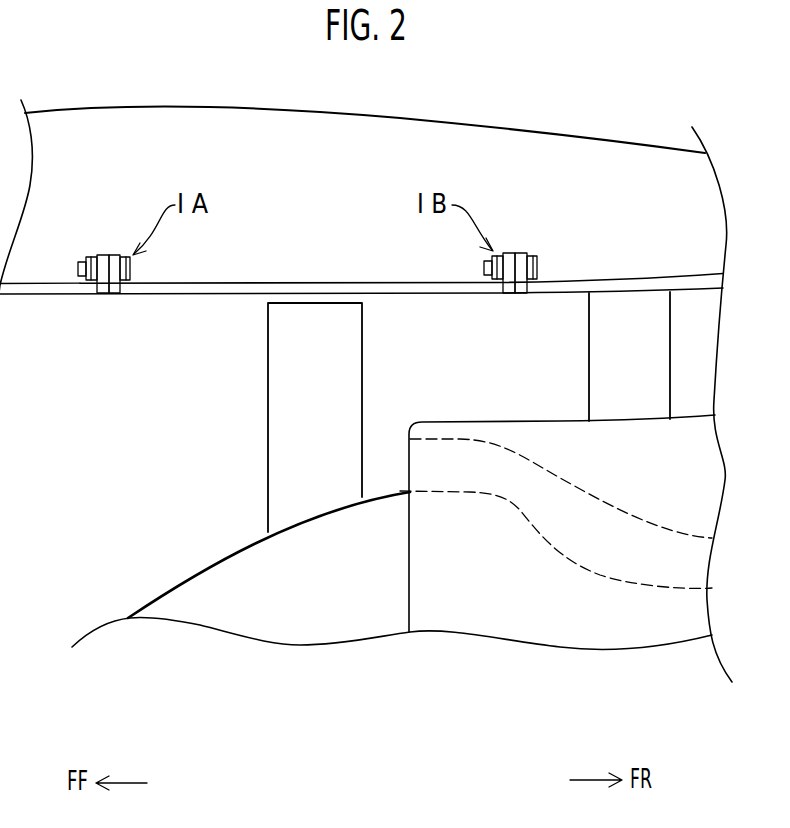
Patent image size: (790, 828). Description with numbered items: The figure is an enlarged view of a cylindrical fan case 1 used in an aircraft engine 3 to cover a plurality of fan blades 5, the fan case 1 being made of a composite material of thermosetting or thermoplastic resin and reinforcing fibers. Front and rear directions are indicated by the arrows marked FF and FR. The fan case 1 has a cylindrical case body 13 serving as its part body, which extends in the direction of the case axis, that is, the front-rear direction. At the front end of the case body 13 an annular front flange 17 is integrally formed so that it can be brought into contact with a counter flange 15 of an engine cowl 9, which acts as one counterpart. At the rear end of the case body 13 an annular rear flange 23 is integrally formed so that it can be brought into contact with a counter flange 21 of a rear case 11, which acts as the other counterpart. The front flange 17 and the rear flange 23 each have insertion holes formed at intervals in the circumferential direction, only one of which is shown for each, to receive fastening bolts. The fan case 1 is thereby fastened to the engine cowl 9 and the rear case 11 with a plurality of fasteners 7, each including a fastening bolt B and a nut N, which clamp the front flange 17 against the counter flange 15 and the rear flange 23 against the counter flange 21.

The fan case 1 is at (301, 252).
The aircraft engine 3 is at (393, 532).
The fan blades 5 is at (276, 437).
The fasteners 7 is at (310, 284).
The engine cowl 9 is at (38, 283).
The rear case 11 is at (601, 282).
The case body 13 is at (368, 283).
The counter flange 15 is at (103, 255).
The front flange 17 is at (115, 255).
The counter flange 21 is at (520, 253).
The rear flange 23 is at (506, 253).